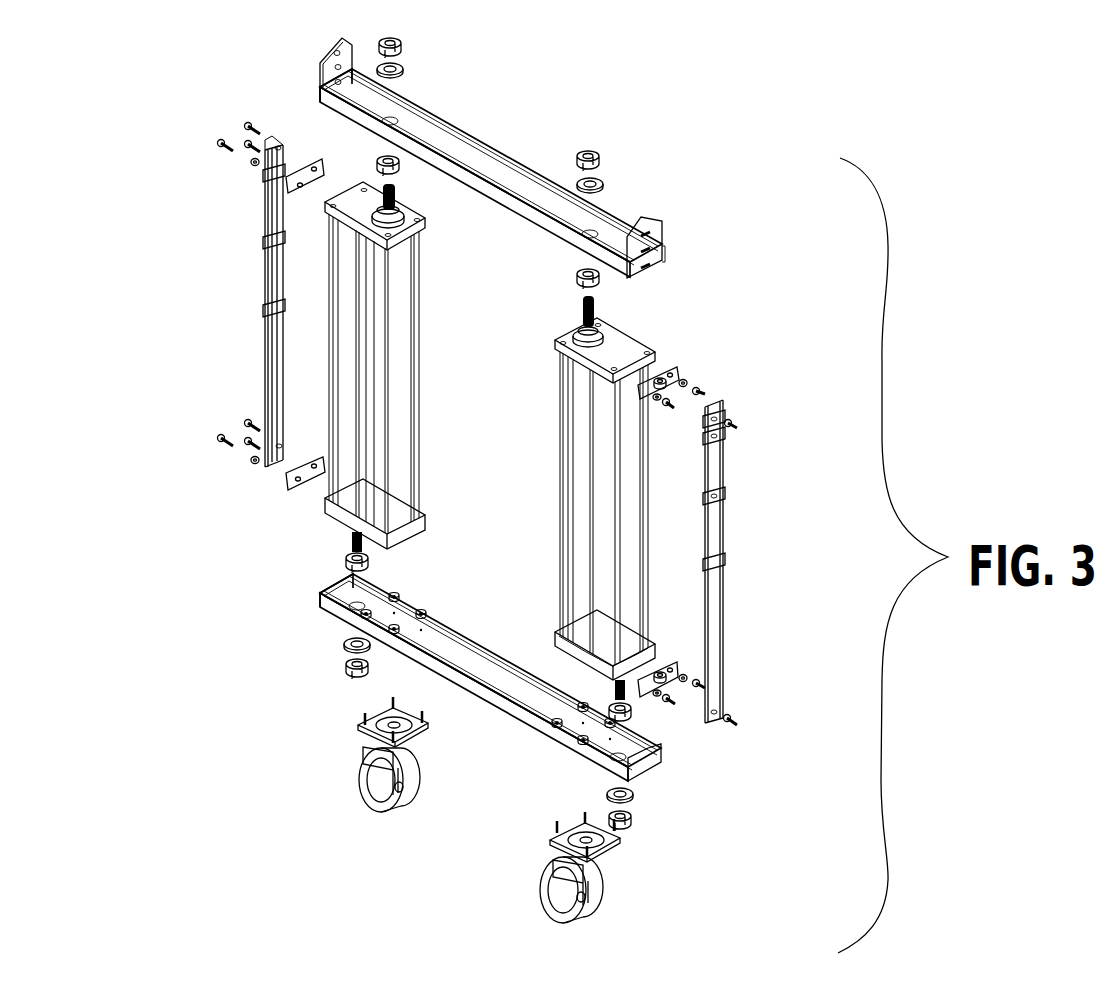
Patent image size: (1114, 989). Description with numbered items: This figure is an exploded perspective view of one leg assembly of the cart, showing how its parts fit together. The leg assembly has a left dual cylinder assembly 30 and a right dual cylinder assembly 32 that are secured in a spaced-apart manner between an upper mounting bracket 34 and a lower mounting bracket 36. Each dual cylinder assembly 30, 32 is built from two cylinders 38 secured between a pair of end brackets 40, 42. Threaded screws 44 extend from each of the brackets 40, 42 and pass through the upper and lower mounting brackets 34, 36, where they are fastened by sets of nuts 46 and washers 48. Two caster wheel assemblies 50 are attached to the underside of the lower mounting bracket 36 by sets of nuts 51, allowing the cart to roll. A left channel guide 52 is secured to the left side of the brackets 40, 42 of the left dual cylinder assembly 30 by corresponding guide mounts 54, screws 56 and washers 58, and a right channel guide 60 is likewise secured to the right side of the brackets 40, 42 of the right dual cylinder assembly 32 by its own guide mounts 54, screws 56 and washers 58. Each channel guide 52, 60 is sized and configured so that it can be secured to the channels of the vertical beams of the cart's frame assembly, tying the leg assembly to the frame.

The left dual cylinder assembly 30 is at (438, 303).
The right dual cylinder assembly 32 is at (548, 542).
The upper mounting bracket 34 is at (472, 138).
The lower mounting bracket 36 is at (538, 730).
The cylinder 38 is at (400, 405).
The bracket 40 is at (348, 480).
The bracket 42 is at (357, 200).
The threaded screw 44 is at (597, 300).
The nut 46 is at (587, 150).
The washer 48 is at (607, 188).
The caster wheel assembly 50 is at (363, 752).
The nut 51 is at (398, 597).
The left channel guide 52 is at (267, 325).
The guide mount 54 is at (313, 160).
The screw 56 is at (218, 148).
The washer 58 is at (252, 166).
The right channel guide 60 is at (725, 610).